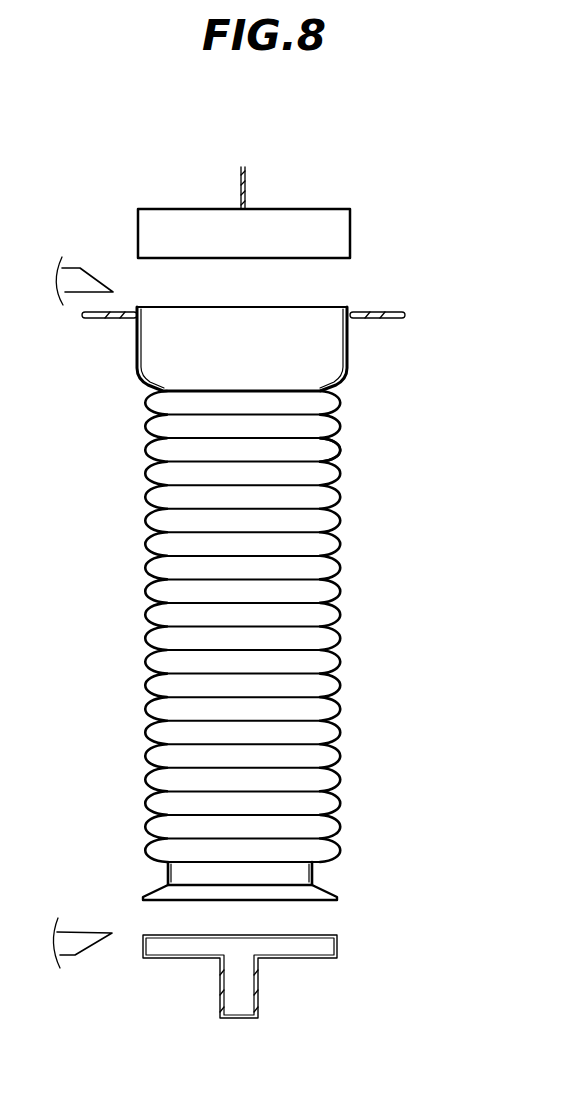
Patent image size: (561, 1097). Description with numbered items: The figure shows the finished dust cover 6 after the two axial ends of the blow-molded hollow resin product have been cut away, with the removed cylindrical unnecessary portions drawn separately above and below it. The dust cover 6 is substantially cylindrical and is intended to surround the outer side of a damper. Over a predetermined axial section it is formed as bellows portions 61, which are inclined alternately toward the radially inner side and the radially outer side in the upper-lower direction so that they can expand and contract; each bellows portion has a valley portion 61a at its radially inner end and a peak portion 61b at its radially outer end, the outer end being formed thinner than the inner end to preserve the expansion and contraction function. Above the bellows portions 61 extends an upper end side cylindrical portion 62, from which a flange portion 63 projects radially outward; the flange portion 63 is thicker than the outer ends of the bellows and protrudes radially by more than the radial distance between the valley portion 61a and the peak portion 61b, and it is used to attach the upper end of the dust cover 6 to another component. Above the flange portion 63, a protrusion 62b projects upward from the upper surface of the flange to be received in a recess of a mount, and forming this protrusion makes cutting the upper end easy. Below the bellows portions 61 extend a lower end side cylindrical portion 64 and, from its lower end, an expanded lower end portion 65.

The dust cover 6 is at (152, 560).
The bellows portions 61 is at (340, 573).
The valley portion 61a is at (338, 462).
The peak portion 61b is at (338, 473).
The upper end side cylindrical portion 62 is at (350, 348).
The protrusion 62b is at (348, 307).
The flange portion 63 is at (390, 315).
The lower end side cylindrical portion 64 is at (315, 870).
The expanded lower end portion 65 is at (338, 892).